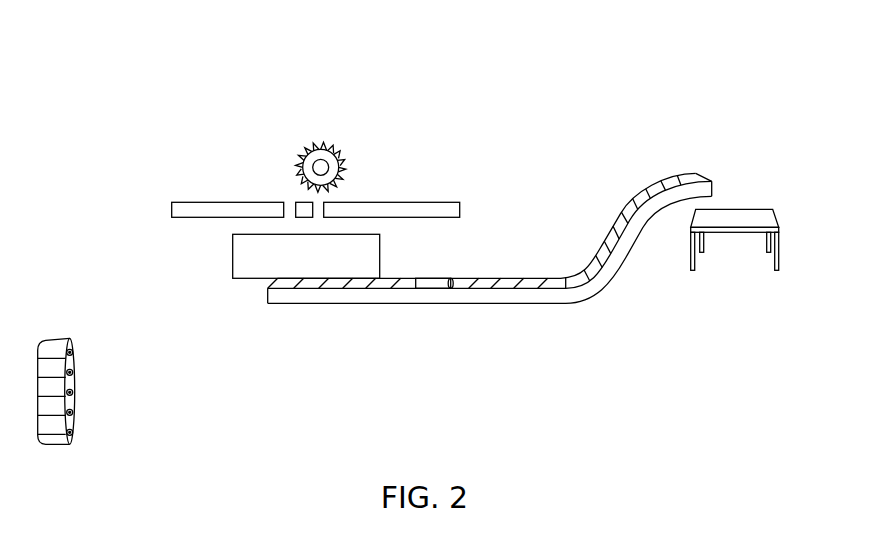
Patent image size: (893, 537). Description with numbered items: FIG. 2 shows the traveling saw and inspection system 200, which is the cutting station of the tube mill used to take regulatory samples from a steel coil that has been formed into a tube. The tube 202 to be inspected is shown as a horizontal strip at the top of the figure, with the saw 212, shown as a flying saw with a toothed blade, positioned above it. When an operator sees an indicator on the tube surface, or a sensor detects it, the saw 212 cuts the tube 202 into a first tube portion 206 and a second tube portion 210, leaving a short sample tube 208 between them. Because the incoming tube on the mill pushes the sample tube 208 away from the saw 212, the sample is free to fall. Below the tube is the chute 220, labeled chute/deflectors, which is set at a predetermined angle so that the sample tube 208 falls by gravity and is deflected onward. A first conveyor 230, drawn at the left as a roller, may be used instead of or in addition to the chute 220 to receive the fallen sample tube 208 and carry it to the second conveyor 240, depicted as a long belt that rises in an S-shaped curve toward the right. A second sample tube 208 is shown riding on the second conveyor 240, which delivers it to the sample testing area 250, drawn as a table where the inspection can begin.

The traveling saw and inspection system 200 is at (407, 26).
The tube 202 is at (459, 208).
The first tube portion 206 is at (372, 202).
The sample tube 208 is at (296, 202).
The second tube portion 210 is at (178, 202).
The saw 212 is at (325, 146).
The chute 220 is at (232, 255).
The first conveyor 230 is at (58, 338).
The second conveyor 240 is at (275, 302).
The sample testing area 250 is at (752, 209).